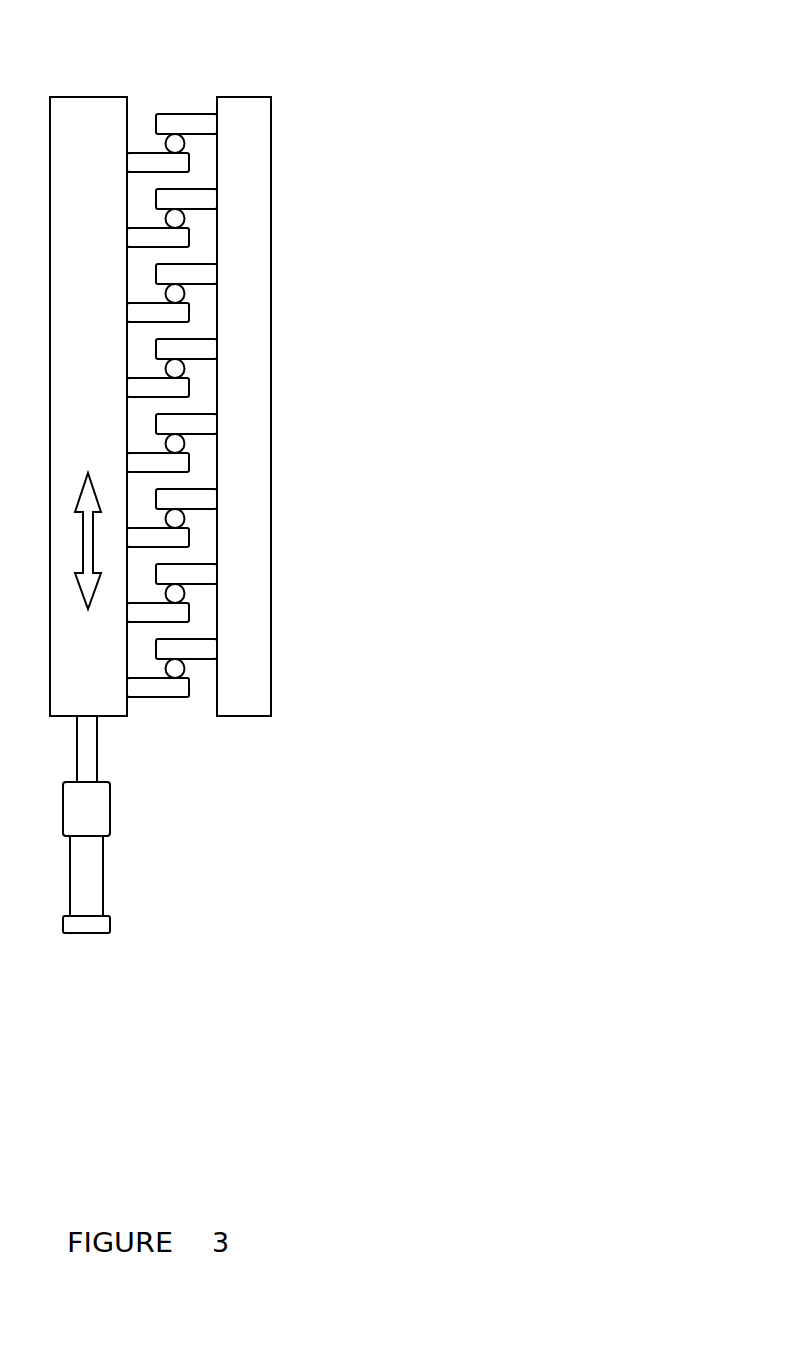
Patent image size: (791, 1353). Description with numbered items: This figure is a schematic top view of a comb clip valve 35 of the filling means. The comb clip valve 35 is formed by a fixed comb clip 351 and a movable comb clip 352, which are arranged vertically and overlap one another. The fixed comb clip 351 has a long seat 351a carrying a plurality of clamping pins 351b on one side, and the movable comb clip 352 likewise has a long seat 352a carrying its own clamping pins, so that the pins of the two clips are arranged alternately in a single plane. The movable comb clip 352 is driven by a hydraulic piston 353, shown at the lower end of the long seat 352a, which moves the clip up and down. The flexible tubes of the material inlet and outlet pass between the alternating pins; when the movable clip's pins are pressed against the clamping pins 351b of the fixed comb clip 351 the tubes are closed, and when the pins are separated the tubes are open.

The comb clip valve 35 is at (438, 18).
The fixed comb clip 351 is at (273, 163).
The long seat 351a is at (257, 322).
The clamping pins 351b is at (177, 273).
The movable comb clip 352 is at (102, 97).
The long seat 352a is at (110, 420).
The hydraulic piston 353 is at (96, 878).